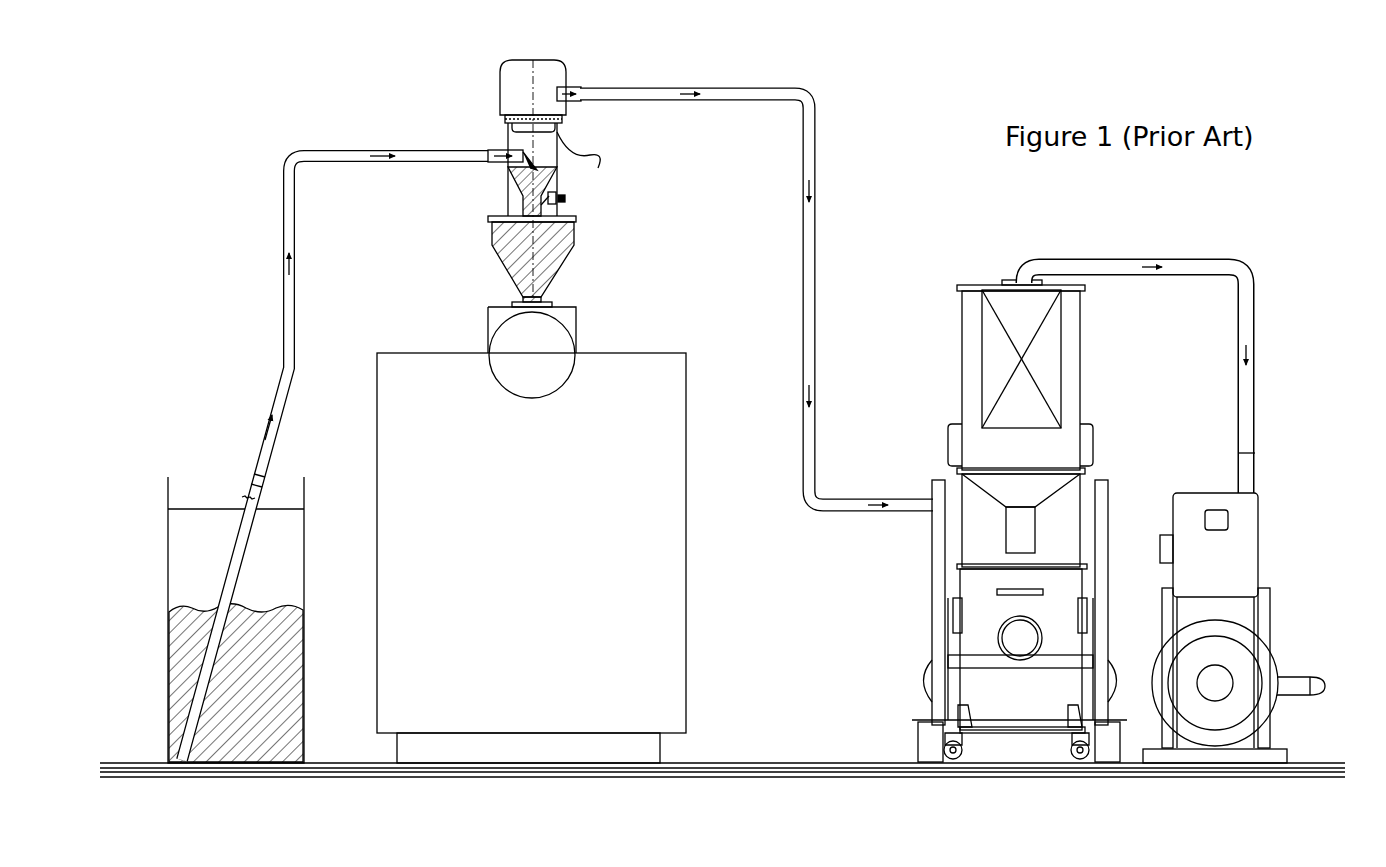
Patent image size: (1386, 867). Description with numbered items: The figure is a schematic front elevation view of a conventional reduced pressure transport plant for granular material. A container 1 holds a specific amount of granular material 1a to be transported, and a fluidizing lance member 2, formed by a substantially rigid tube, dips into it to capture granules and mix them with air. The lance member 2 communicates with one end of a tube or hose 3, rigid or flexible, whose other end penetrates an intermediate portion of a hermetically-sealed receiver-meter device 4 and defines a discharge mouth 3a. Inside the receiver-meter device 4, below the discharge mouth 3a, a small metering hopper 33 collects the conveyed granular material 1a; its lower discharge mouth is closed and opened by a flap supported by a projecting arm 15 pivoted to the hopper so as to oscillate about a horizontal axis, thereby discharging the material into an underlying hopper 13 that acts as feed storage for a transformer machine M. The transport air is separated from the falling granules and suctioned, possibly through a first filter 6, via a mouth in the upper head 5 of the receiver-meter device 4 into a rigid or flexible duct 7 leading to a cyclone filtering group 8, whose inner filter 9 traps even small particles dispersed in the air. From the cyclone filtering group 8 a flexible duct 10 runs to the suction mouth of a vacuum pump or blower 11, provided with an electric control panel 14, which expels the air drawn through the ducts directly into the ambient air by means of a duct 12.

The container 1 is at (303, 604).
The granular material 1a is at (296, 672).
The fluidizing lance member 2 is at (246, 500).
The tube or hose 3 is at (283, 382).
The discharge mouth 3a is at (526, 160).
The metering hopper 33 is at (537, 183).
The receiver-meter device 4 is at (504, 138).
The upper head 5 is at (566, 70).
The first filter 6 is at (590, 154).
The duct 7 is at (818, 150).
The cyclone filtering group 8 is at (960, 386).
The inner filter 9 is at (980, 330).
The flexible duct 10 is at (1256, 348).
The vacuum pump or blower 11 is at (1275, 660).
The duct 12 is at (1326, 685).
The hopper 13 is at (498, 258).
The electric control panel 14 is at (1258, 538).
The projecting arm 15 is at (566, 200).
The transformer machine M is at (686, 596).